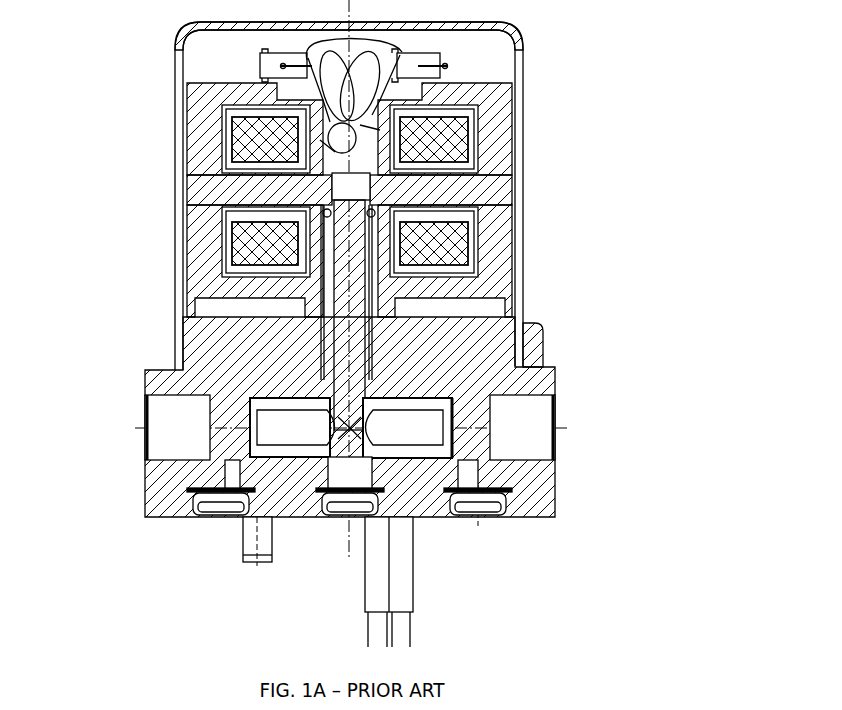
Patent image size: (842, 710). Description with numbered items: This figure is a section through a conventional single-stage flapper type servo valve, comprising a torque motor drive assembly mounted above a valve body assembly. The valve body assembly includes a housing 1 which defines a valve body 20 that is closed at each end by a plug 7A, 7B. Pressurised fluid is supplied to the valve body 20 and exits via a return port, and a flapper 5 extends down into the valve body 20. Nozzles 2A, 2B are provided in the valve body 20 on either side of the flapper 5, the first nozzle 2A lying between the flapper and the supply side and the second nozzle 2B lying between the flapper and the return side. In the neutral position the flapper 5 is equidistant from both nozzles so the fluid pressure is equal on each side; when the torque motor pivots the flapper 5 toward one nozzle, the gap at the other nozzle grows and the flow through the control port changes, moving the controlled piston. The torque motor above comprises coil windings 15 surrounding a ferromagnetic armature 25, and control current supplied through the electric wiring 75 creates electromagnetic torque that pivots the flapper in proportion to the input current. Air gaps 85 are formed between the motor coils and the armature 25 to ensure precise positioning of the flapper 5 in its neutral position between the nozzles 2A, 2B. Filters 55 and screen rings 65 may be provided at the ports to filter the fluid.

The housing 1 is at (203, 357).
The flapper 5 is at (357, 365).
The coils 15 is at (257, 143).
The valve body 20 is at (502, 388).
The ferromagnetic armature 25 is at (485, 190).
The filters 55 is at (197, 490).
The screen rings 65 is at (252, 494).
The electric wiring 75 is at (323, 57).
The air gaps 85 is at (237, 179).
The first nozzle 2A is at (245, 413).
The second nozzle 2B is at (423, 423).
The plug 7A is at (162, 447).
The plug 7B is at (537, 443).